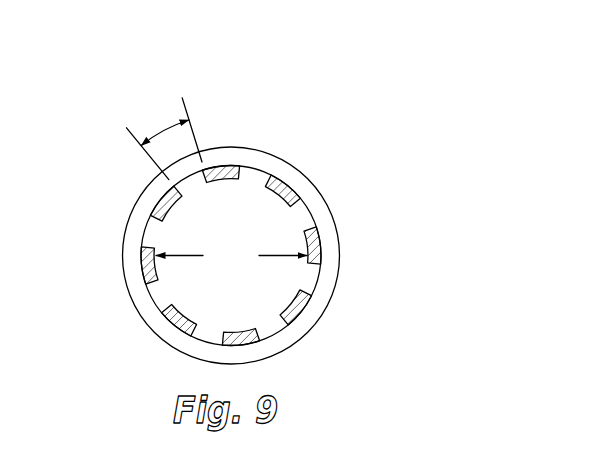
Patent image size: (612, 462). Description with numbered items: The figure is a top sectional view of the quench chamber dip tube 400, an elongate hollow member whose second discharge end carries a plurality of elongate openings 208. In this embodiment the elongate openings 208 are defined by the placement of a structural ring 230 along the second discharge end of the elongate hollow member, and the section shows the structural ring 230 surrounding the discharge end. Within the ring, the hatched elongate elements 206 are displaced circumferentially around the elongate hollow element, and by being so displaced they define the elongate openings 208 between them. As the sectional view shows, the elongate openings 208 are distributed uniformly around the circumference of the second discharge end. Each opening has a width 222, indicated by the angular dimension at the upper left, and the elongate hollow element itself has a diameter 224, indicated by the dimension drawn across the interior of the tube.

The quench chamber dip tube 400 is at (243, 199).
The structural ring 230 is at (330, 224).
The elongate elements 206 is at (306, 208).
The elongate openings 208 is at (307, 198).
The width 222 is at (187, 114).
The diameter 224 is at (231, 255).